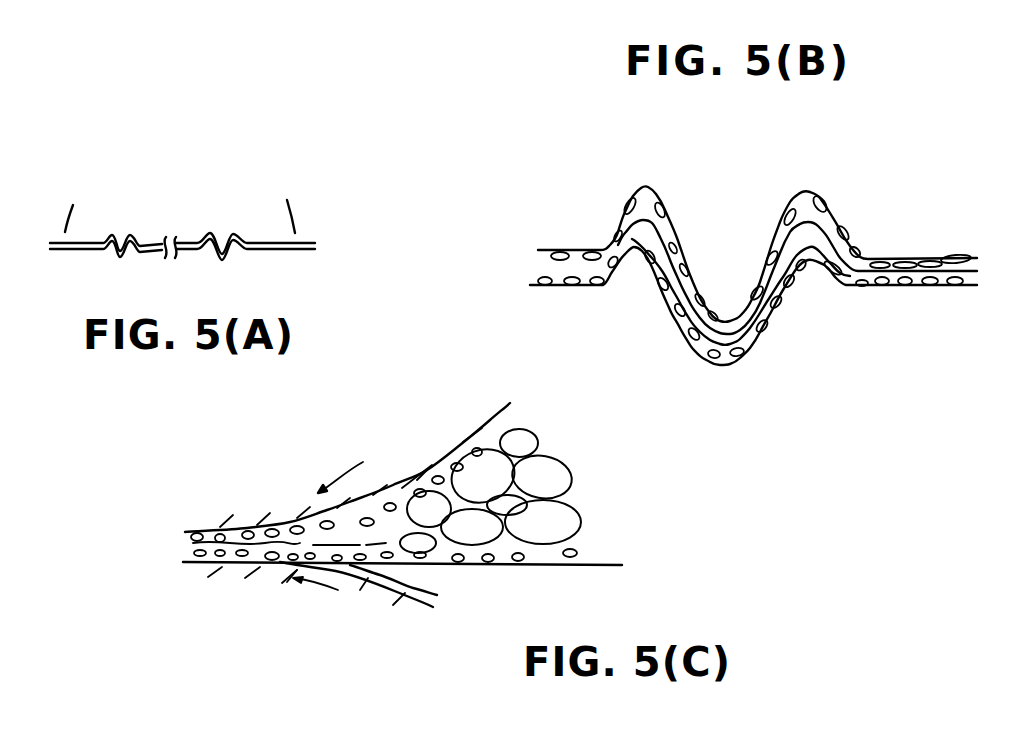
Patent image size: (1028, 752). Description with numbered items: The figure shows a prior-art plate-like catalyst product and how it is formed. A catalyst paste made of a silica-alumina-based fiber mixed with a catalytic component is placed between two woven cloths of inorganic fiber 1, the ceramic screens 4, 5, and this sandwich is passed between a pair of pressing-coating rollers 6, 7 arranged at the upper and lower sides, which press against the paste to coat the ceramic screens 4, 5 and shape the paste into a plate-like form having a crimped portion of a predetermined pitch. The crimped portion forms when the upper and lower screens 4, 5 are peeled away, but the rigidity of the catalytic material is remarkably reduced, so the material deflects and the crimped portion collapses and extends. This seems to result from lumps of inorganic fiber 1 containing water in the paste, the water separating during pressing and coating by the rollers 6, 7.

The inorganic fiber 1 is at (862, 256).
The ceramic screen 4 is at (580, 553).
The ceramic screen 5 is at (480, 448).
The pressing-coating roller 6 is at (507, 412).
The pressing-coating roller 7 is at (424, 607).